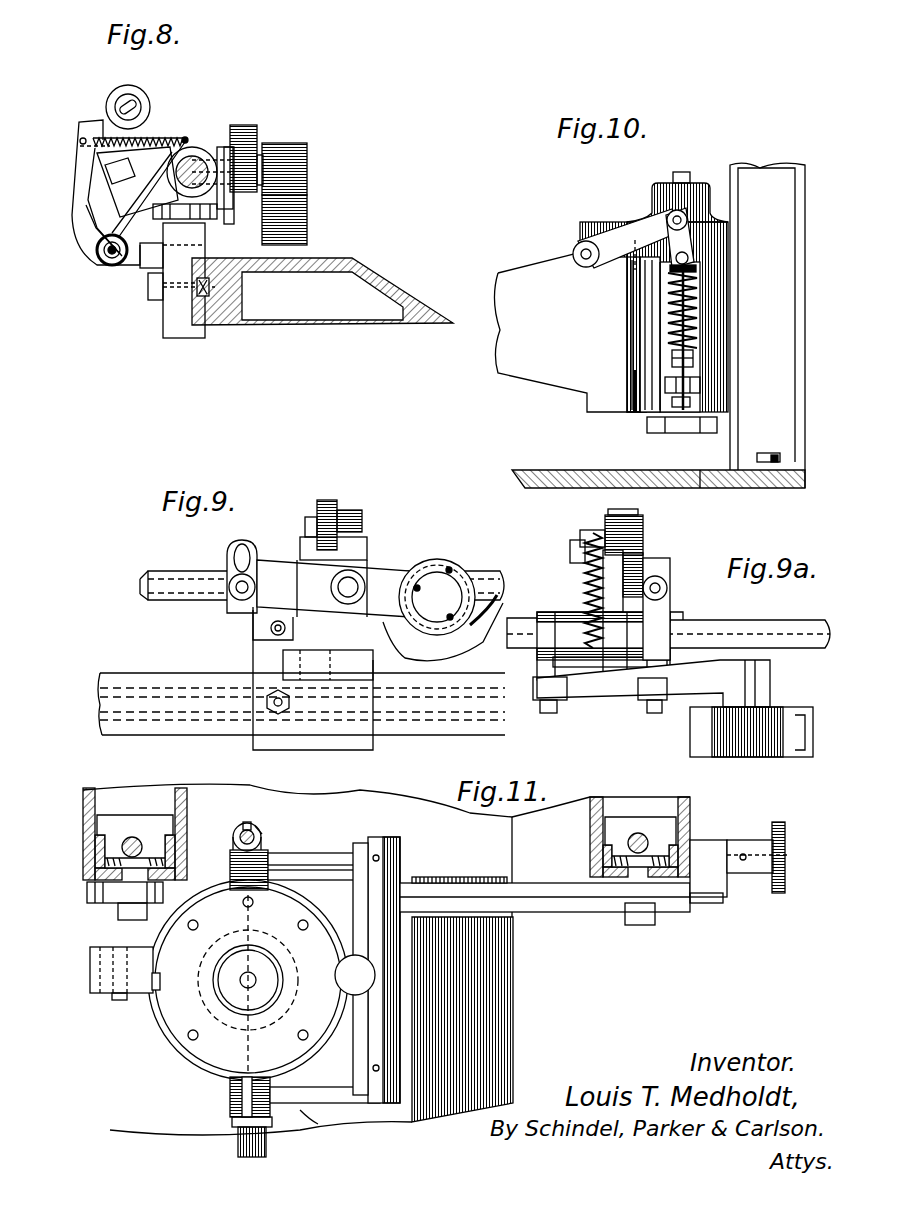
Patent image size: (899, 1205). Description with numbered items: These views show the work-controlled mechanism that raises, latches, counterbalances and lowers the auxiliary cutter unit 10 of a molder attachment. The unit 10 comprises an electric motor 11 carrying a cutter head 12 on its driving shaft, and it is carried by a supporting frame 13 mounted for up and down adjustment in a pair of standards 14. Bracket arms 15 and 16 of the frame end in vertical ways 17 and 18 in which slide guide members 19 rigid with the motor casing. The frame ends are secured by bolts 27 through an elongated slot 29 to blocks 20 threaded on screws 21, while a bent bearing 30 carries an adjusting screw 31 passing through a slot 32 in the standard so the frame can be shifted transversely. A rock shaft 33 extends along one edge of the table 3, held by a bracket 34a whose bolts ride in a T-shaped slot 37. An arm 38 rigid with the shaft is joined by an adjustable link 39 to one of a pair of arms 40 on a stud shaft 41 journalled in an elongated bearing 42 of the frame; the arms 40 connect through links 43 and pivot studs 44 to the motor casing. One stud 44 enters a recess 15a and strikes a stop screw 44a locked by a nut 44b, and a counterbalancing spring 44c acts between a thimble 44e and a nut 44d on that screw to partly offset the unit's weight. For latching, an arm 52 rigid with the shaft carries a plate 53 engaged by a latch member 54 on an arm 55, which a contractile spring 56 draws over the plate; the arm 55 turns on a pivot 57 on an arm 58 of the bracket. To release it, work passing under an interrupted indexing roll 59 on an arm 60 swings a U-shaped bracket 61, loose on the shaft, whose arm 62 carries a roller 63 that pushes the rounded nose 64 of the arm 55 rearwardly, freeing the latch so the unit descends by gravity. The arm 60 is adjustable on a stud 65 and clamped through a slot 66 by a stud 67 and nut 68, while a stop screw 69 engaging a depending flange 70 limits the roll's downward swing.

In FIG. 8, the table 3 is at (332, 259).
In FIG. 11, the table 3 is at (395, 1122).
In FIG. 10, the auxiliary cutter unit 10 is at (652, 197).
In FIG. 10, the electric motor 11 is at (676, 182).
In FIG. 11, the electric motor 11 is at (248, 985).
In FIG. 10, the cutter head 12 is at (672, 426).
In FIG. 10, the supporting frame 13 is at (528, 360).
In FIG. 11, the supporting frame 13 is at (455, 915).
In FIG. 10, the standards 14 is at (780, 168).
In FIG. 11, the standards 14 is at (83, 846).
In FIG. 10, the bracket arm 15 is at (633, 396).
In FIG. 11, the bracket arm 15 is at (283, 878).
In FIG. 10, the notch or recess 15a is at (662, 290).
In FIG. 10, the bracket arm 16 is at (715, 307).
In FIG. 11, the bracket arm 16 is at (205, 880).
In FIG. 11, the vertical way 17 is at (122, 994).
In FIG. 11, the vertical way 18 is at (372, 967).
In FIG. 11, the guide members 19 is at (152, 992).
In FIG. 11, the blocks 20 is at (137, 818).
In FIG. 11, the screws 21 is at (130, 838).
In FIG. 11, the bolts 27 is at (130, 918).
In FIG. 11, the elongated slot 29 is at (95, 902).
In FIG. 11, the bearing 30 is at (740, 840).
In FIG. 11, the adjusting screw 31 is at (710, 903).
In FIG. 11, the slot 32 is at (697, 902).
In FIG. 8, the rock shaft 33 is at (199, 148).
In FIG. 9, the rock shaft 33 is at (168, 572).
In FIG. 9A, the rock shaft 33 is at (772, 622).
In FIG. 11, the rock shaft 33 is at (240, 1141).
In FIG. 8, the bracket 34a is at (176, 318).
In FIG. 9, the bracket 34a is at (373, 745).
In FIG. 9A, the bracket 34a is at (682, 616).
In FIG. 8, the T-shaped slot 37 is at (213, 288).
In FIG. 9, the T-shaped slot 37 is at (215, 722).
In FIG. 11, the arm 38 is at (234, 1120).
In FIG. 11, the adjustable link 39 is at (318, 1122).
In FIG. 10, the arms 40 is at (616, 235).
In FIG. 11, the arms 40 is at (340, 858).
In FIG. 10, the stud shaft 41 is at (575, 251).
In FIG. 11, the stud shaft 41 is at (422, 878).
In FIG. 10, the elongated bearing 42 is at (573, 257).
In FIG. 11, the elongated bearing 42 is at (398, 1010).
In FIG. 10, the links 43 is at (692, 208).
In FIG. 11, the links 43 is at (232, 842).
In FIG. 10, the pivot studs 44 is at (692, 258).
In FIG. 11, the pivot studs 44 is at (262, 838).
In FIG. 10, the stop screw 44a is at (702, 382).
In FIG. 11, the stop screw 44a is at (262, 826).
In FIG. 10, the nut 44b is at (695, 400).
In FIG. 10, the counterbalancing spring 44c is at (700, 330).
In FIG. 10, the nut 44d is at (695, 358).
In FIG. 10, the thimble 44e is at (700, 268).
In FIG. 11, the thimble 44e is at (252, 830).
In FIG. 8, the arm 52 is at (137, 182).
In FIG. 9A, the arm 52 is at (612, 590).
In FIG. 8, the plate 53 is at (106, 174).
In FIG. 8, the latch member 54 is at (80, 150).
In FIG. 8, the arm 55 is at (88, 230).
In FIG. 9A, the arm 55 is at (615, 512).
In FIG. 8, the contractile spring 56 is at (188, 136).
In FIG. 9A, the contractile spring 56 is at (587, 597).
In FIG. 8, the pivot 57 is at (107, 266).
In FIG. 9, the pivot 57 is at (360, 655).
In FIG. 9A, the pivot 57 is at (571, 550).
In FIG. 8, the arm 58 is at (146, 260).
In FIG. 9A, the arm 58 is at (583, 568).
In FIG. 8, the interrupted indexing roll 59 is at (290, 143).
In FIG. 9, the interrupted indexing roll 59 is at (443, 610).
In FIG. 9A, the interrupted indexing roll 59 is at (768, 757).
In FIG. 9, the arm 60 is at (380, 570).
In FIG. 9A, the arm 60 is at (612, 692).
In FIG. 8, the U-shaped bracket 61 is at (228, 146).
In FIG. 9A, the U-shaped bracket 61 is at (585, 668).
In FIG. 8, the arm 62 is at (168, 130).
In FIG. 9, the arm 62 is at (362, 540).
In FIG. 9A, the arm 62 is at (669, 600).
In FIG. 8, the roller 63 is at (128, 98).
In FIG. 9, the roller 63 is at (328, 500).
In FIG. 9A, the roller 63 is at (642, 562).
In FIG. 8, the rounded nose 64 is at (101, 122).
In FIG. 9, the rounded nose 64 is at (310, 517).
In FIG. 9A, the rounded nose 64 is at (632, 535).
In FIG. 9, the stud 65 is at (350, 605).
In FIG. 9A, the stud 65 is at (656, 706).
In FIG. 9, the slot 66 is at (243, 540).
In FIG. 9, the stud 67 is at (232, 596).
In FIG. 9A, the stud 67 is at (553, 702).
In FIG. 9, the nut 68 is at (250, 556).
In FIG. 8, the stop screw 69 is at (206, 221).
In FIG. 8, the depending flange 70 is at (232, 214).
In FIG. 9, the depending flange 70 is at (270, 630).